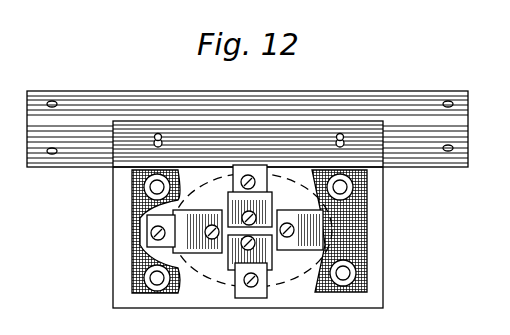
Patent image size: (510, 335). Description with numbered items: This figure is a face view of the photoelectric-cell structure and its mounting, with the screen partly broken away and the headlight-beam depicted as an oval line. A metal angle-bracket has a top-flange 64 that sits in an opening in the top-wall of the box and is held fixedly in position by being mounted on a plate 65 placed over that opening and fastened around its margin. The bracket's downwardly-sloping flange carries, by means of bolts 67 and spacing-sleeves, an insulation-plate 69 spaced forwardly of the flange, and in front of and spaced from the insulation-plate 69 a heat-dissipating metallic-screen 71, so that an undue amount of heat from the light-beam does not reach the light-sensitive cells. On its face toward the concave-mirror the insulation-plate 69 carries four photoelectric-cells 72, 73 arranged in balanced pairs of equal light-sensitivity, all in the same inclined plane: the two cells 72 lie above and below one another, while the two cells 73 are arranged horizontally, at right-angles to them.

The top-flange 64 is at (195, 137).
The plate 65 is at (110, 112).
The bolts 67 is at (150, 188).
The insulation-plate 69 is at (122, 225).
The heat-dissipating metallic-screen 71 is at (133, 258).
The photoelectric-cells 72 is at (262, 216).
The photoelectric-cells 73 is at (192, 226).